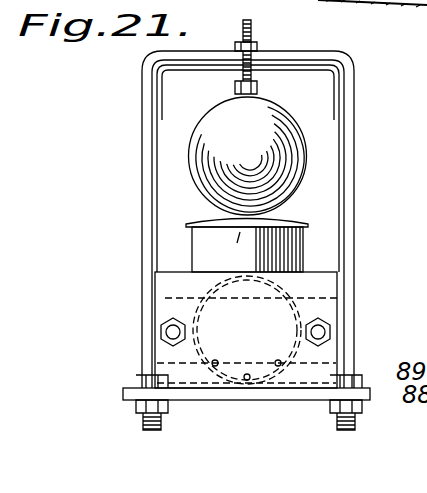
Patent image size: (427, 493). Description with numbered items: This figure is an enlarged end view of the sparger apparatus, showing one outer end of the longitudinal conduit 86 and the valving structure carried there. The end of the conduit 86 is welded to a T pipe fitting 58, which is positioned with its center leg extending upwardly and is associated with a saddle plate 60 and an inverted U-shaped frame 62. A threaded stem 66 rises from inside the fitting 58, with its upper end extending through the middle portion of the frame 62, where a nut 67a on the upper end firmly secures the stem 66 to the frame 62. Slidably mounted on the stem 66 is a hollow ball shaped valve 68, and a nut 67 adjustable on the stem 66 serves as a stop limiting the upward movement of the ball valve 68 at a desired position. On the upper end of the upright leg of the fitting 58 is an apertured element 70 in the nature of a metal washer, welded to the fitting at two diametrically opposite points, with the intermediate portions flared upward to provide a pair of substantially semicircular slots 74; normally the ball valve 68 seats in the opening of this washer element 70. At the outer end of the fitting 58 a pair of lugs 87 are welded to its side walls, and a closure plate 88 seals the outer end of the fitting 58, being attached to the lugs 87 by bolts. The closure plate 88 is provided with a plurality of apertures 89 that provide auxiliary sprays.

The T pipe fitting 58 is at (300, 252).
The saddle plate 60 is at (292, 402).
The frame 62 is at (351, 174).
The threaded stem 66 is at (246, 21).
The nut 67 is at (258, 87).
The nut 67a is at (258, 44).
The ball shaped valve 68 is at (288, 138).
The apertured element 70 is at (207, 218).
The slots 74 is at (239, 251).
The conduit 86 is at (203, 309).
The lugs 87 is at (170, 297).
The closure plate 88 is at (192, 376).
The apertures 89 is at (330, 327).